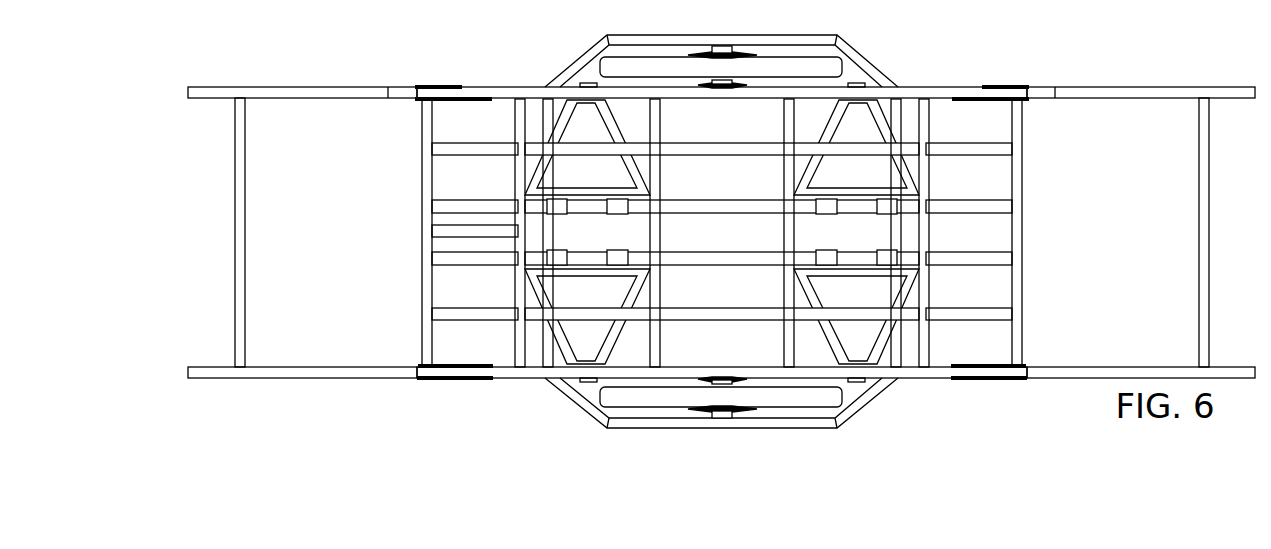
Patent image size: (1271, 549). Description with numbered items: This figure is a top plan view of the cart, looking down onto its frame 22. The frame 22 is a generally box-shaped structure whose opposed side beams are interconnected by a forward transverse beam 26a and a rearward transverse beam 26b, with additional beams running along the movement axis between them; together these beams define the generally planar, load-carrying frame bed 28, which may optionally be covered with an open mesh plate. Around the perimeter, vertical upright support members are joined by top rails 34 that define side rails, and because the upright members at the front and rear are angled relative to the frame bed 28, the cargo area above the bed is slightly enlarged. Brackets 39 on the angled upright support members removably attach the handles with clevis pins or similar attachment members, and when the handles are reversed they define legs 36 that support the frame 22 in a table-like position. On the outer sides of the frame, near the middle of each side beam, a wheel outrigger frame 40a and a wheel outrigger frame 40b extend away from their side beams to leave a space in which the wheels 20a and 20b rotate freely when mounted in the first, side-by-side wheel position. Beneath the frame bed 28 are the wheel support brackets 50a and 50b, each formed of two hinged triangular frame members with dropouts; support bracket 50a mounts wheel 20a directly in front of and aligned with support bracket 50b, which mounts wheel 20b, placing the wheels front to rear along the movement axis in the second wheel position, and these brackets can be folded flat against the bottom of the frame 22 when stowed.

The wheel 20a is at (565, 45).
The wheel 20b is at (575, 425).
The frame 22 is at (435, 382).
The forward transverse beam 26a is at (923, 218).
The rearward transverse beam 26b is at (518, 283).
The frame bed 28 is at (655, 236).
The top rail 34 is at (502, 93).
The leg 36 is at (287, 88).
The bracket 39 is at (435, 87).
The wheel outrigger frame 40a is at (853, 72).
The wheel outrigger frame 40b is at (850, 402).
The wheel support bracket 50a is at (918, 285).
The wheel support bracket 50b is at (525, 183).